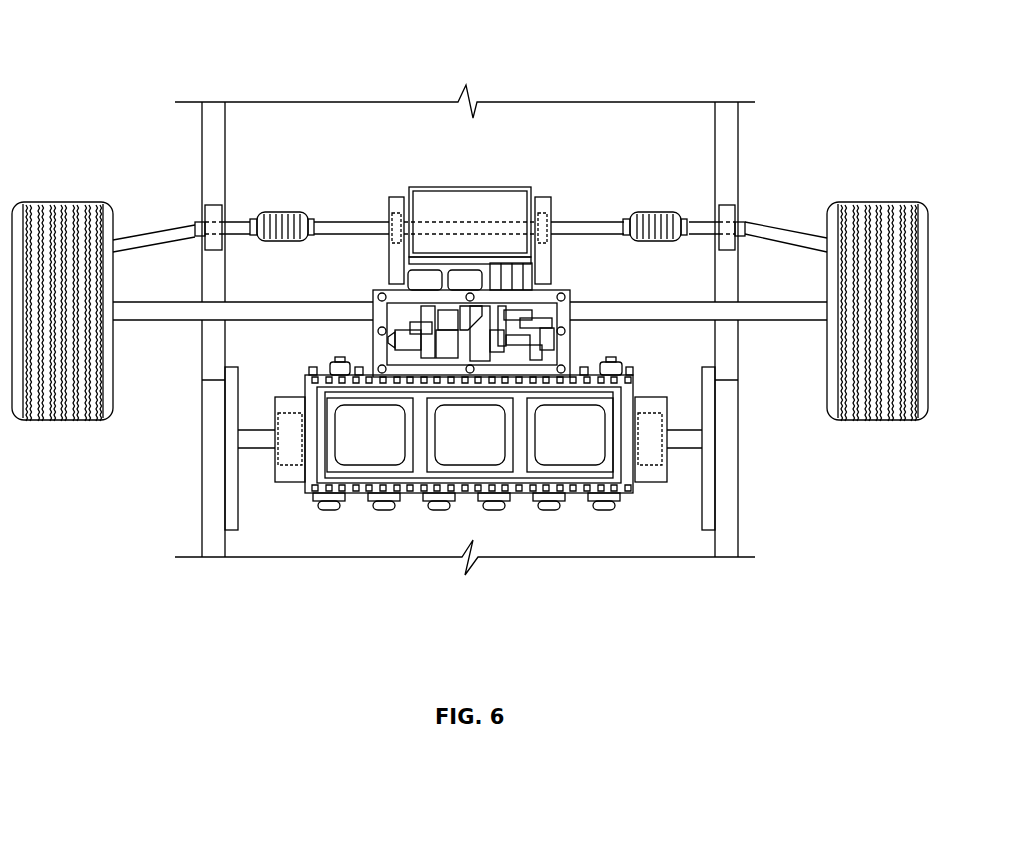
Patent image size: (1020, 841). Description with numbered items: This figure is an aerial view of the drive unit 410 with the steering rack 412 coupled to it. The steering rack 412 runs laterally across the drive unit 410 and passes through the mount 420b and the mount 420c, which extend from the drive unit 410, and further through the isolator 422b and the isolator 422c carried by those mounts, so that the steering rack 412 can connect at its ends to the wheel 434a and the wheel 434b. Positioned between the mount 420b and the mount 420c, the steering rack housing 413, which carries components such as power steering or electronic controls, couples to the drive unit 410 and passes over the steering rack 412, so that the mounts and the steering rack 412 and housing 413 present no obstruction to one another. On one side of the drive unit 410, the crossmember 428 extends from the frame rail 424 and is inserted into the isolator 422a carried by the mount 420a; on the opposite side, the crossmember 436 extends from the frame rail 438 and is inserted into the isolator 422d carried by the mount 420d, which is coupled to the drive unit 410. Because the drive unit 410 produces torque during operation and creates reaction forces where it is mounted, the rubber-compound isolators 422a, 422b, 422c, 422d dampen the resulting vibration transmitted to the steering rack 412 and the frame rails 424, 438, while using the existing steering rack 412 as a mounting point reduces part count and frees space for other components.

The drive unit 410 is at (513, 507).
The steering rack 412 is at (577, 220).
The steering rack housing 413 is at (450, 187).
The mount 420a is at (287, 482).
The mount 420b is at (395, 200).
The mount 420c is at (545, 200).
The mount 420d is at (660, 482).
The isolator 422a is at (297, 465).
The isolator 422b is at (388, 205).
The isolator 422c is at (553, 205).
The isolator 422d is at (645, 465).
The frame rail 424 is at (205, 517).
The crossmember 428 is at (260, 448).
The wheel 434a is at (52, 202).
The wheel 434b is at (868, 203).
The crossmember 436 is at (675, 450).
The frame rail 438 is at (738, 512).